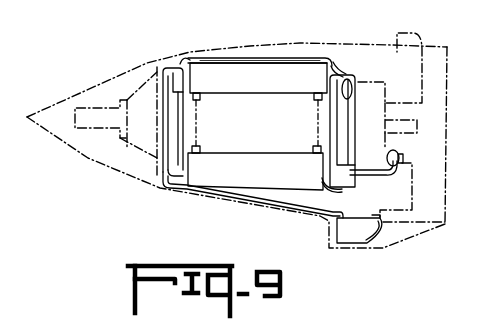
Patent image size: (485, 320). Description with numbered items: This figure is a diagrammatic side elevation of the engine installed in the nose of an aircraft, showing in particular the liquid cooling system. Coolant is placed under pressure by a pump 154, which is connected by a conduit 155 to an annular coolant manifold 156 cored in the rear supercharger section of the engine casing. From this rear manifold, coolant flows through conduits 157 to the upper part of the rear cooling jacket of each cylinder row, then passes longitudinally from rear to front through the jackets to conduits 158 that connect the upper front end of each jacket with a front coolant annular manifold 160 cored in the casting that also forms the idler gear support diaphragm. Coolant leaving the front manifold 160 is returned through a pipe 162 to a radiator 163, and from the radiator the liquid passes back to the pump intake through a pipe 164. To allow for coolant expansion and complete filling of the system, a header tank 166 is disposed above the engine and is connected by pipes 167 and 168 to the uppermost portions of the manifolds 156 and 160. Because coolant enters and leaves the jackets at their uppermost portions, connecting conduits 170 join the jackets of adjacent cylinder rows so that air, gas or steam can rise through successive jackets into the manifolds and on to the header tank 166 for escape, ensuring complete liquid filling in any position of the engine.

The pump 154 is at (402, 152).
The conduit 155 is at (382, 170).
The annular coolant manifold 156 is at (350, 93).
The conduits 157 is at (333, 70).
The conduits 158 is at (183, 70).
The front coolant annular manifold 160 is at (190, 83).
The pipe 162 is at (230, 203).
The radiator 163 is at (380, 229).
The pipe 164 is at (417, 190).
The header tank 166 is at (208, 54).
The pipe 167 is at (187, 62).
The pipe 168 is at (287, 58).
The connecting conduits 170 is at (197, 127).